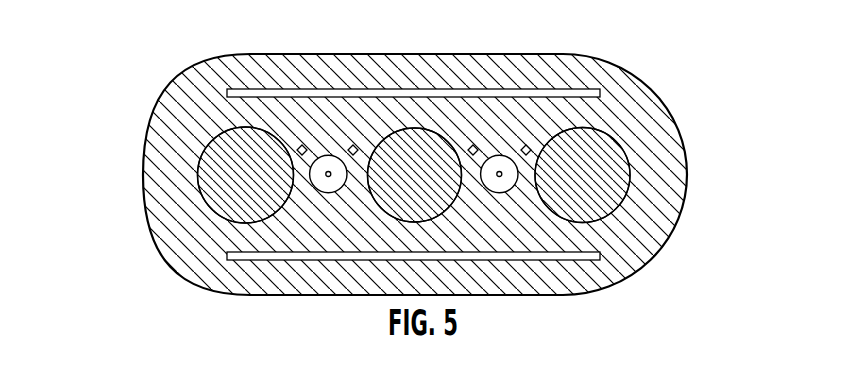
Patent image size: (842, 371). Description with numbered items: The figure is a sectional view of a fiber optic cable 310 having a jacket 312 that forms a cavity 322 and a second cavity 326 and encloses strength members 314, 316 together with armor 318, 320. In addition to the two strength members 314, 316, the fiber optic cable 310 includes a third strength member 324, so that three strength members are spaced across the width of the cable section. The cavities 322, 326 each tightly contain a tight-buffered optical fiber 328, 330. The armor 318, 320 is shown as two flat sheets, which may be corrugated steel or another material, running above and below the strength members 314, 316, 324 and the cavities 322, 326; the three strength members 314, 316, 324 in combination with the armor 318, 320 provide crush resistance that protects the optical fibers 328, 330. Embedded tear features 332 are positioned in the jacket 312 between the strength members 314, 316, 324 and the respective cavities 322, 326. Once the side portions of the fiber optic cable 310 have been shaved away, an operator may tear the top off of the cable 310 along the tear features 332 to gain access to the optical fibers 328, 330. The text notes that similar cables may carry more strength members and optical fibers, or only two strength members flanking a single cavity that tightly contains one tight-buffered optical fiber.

The fiber optic cable 310 is at (389, 177).
The jacket 312 is at (647, 210).
The strength member 314 is at (600, 148).
The strength member 316 is at (235, 181).
The armor 318 is at (574, 88).
The armor 320 is at (597, 254).
The cavity 322 is at (498, 192).
The third strength member 324 is at (412, 209).
The second cavity 326 is at (328, 193).
The tight-buffered optical fiber 328 is at (499, 171).
The tight-buffered optical fiber 330 is at (328, 171).
The embedded tear features 332 is at (302, 145).